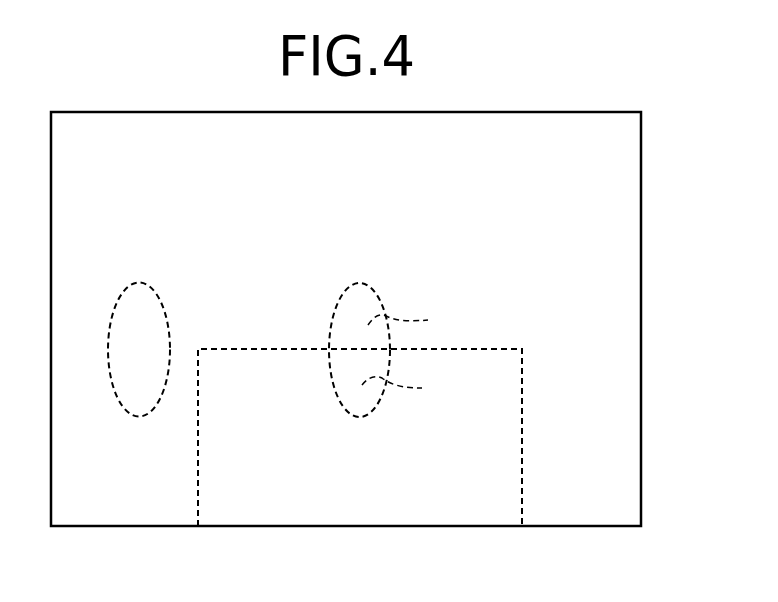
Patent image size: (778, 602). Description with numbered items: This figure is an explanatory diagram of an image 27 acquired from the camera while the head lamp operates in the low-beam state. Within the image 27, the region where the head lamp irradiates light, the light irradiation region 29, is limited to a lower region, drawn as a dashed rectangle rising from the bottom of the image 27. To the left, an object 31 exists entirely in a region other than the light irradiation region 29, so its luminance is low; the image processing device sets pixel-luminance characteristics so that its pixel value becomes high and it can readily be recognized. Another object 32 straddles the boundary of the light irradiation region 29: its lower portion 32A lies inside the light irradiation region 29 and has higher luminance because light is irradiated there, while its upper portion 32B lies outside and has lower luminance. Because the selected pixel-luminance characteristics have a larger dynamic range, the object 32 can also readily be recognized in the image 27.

The image 27 is at (641, 168).
The light irradiation region 29 is at (500, 345).
The object 31 is at (157, 290).
The object 32 is at (378, 292).
The lower portion 32A is at (415, 391).
The upper portion 32B is at (420, 321).